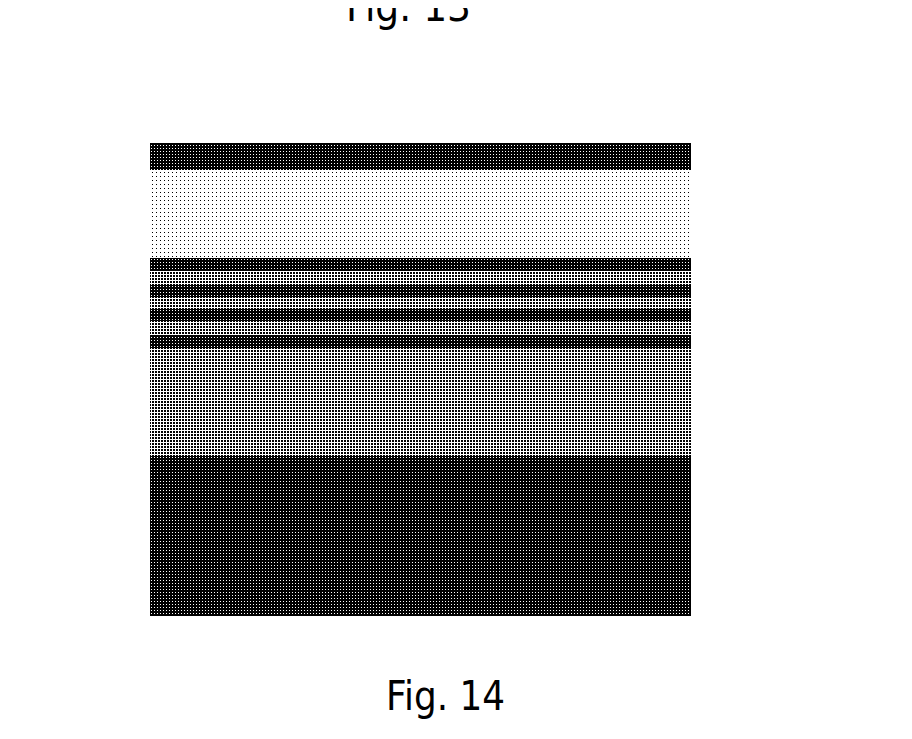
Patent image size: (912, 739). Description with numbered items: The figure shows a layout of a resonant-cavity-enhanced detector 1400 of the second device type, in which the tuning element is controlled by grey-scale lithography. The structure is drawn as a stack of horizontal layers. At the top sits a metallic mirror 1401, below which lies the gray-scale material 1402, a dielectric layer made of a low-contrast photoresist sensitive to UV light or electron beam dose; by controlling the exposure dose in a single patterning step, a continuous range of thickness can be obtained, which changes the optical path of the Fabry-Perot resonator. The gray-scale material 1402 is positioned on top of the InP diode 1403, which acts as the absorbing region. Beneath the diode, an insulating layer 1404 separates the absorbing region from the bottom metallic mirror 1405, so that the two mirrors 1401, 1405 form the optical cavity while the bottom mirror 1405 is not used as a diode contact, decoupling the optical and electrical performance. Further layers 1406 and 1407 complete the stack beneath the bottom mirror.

The layer stack structure 1400 is at (107, 86).
The top metallic mirror 1401 is at (680, 152).
The gray-scale material 1402 is at (680, 207).
The InP diode 1403 is at (694, 250).
The insulating layer 1404 is at (680, 353).
The bottom metallic mirror 1405 is at (680, 380).
The layer 1406 is at (680, 418).
The substrate layer 1407 is at (680, 528).